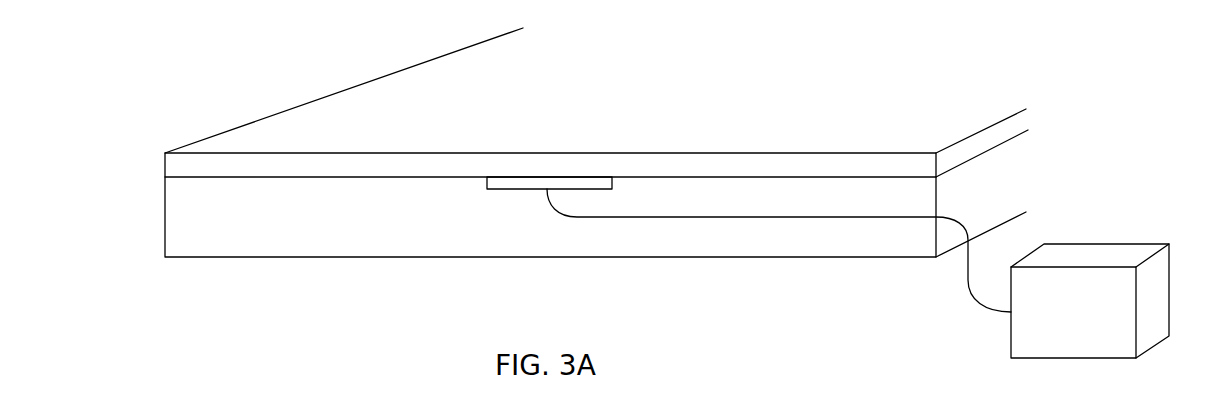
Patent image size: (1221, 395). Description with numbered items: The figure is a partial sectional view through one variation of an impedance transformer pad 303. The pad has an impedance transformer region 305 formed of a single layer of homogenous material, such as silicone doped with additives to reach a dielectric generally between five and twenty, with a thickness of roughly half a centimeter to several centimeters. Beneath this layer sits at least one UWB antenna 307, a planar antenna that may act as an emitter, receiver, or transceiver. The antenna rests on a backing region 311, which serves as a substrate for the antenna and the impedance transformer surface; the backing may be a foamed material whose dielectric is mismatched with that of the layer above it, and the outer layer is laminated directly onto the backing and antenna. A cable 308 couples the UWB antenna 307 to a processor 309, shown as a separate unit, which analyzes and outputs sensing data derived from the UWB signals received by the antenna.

The impedance transformer pad 303 is at (210, 130).
The impedance transformer region 305 is at (143, 155).
The UWB antenna 307 is at (515, 189).
The cable 308 is at (753, 217).
The processor 309 is at (1070, 323).
The backing region 311 is at (253, 212).